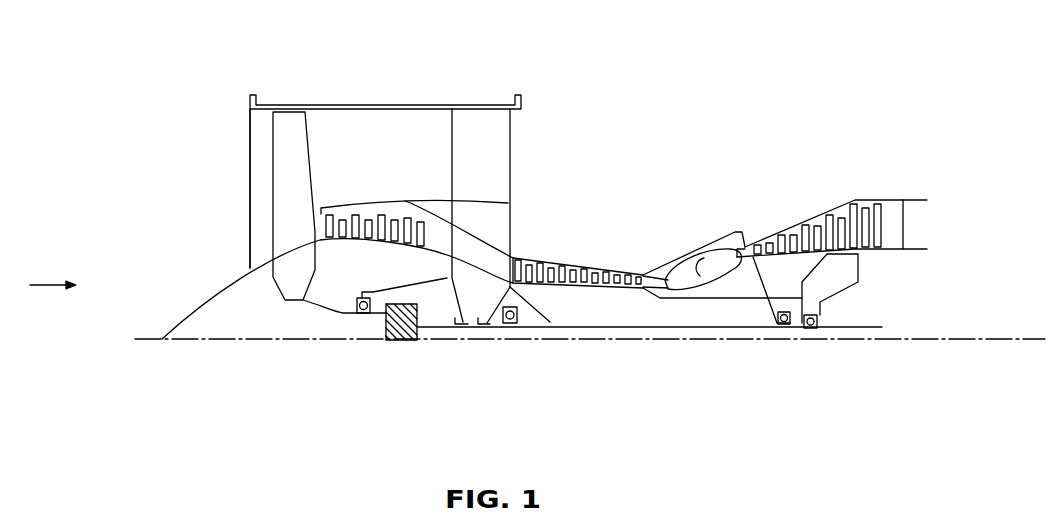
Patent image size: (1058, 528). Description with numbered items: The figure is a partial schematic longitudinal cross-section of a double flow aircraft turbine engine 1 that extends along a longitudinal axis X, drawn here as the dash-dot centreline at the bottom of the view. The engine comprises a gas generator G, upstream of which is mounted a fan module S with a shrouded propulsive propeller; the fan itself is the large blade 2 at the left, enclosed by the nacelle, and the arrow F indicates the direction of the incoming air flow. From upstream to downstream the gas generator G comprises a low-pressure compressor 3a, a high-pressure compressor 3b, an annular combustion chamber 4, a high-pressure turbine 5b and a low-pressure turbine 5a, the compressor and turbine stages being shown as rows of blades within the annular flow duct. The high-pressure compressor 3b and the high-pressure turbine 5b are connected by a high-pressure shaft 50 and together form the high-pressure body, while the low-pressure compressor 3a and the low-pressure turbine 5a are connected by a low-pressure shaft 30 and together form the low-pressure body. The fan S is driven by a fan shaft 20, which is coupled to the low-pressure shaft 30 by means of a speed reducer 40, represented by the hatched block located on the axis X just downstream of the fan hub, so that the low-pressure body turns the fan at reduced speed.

The turbine engine 1 is at (623, 153).
The fan 2 is at (288, 160).
The fan module S is at (270, 183).
The fan shaft 20 is at (280, 215).
The low-pressure compressor 3a is at (346, 222).
The high-pressure compressor 3b is at (542, 265).
The gas generator G is at (594, 260).
The annular combustion chamber 4 is at (698, 267).
The high-pressure turbine 5b is at (748, 252).
The low-pressure turbine 5a is at (857, 217).
The high-pressure shaft 50 is at (697, 298).
The low-pressure shaft 30 is at (605, 328).
The speed reducer 40 is at (400, 318).
The longitudinal axis X is at (152, 341).
The air flow direction F is at (53, 272).